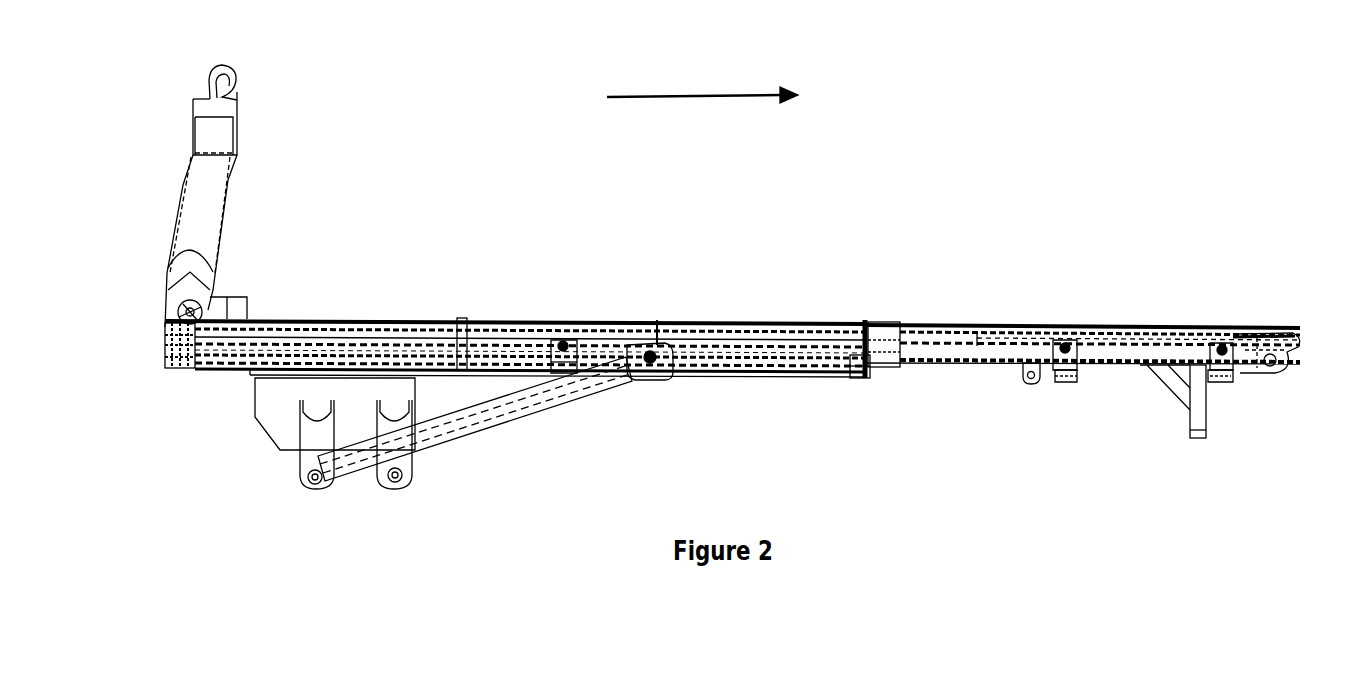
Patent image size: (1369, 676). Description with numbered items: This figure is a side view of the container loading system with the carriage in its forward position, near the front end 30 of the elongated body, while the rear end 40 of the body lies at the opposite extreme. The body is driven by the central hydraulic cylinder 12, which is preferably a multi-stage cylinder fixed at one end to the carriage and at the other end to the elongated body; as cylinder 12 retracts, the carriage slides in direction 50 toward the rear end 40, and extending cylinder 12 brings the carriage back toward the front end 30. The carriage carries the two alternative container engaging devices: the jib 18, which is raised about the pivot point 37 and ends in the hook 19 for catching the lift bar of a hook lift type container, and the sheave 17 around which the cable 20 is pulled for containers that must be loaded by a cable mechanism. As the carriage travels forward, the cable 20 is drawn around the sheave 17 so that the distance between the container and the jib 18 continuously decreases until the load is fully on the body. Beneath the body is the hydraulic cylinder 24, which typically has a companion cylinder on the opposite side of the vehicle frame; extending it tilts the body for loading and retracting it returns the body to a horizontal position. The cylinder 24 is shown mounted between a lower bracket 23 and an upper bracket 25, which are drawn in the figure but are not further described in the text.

The central hydraulic cylinder 12 is at (797, 347).
The sheave 17 is at (172, 323).
The jib 18 is at (200, 207).
The hook 19 is at (230, 98).
The cable 20 is at (247, 300).
The hanger bracket 23 is at (278, 422).
The hydraulic cylinder 24 is at (528, 405).
The strut mounting bracket 25 is at (668, 380).
The front end 30 is at (104, 371).
The pivot point 37 is at (170, 368).
The rear end 40 is at (1366, 369).
The direction 50 is at (670, 81).